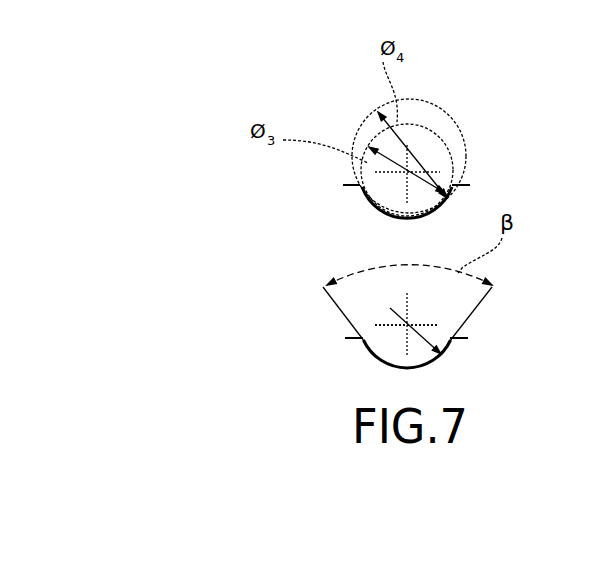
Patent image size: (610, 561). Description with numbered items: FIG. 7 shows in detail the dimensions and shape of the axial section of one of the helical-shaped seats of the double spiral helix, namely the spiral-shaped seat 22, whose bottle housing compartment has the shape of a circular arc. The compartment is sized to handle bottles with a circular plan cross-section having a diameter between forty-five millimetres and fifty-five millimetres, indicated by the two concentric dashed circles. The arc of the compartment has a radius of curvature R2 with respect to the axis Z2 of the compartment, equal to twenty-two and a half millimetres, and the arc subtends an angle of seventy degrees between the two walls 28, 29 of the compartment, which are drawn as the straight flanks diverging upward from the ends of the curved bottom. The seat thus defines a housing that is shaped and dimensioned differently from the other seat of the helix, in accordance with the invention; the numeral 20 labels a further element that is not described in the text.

The pulley 20 is at (577, 4).
The spiral-shaped seat 22 is at (362, 208).
The wall of the compartment 28 is at (358, 344).
The wall of the compartment 29 is at (453, 345).
The radius of curvature R2 is at (563, 327).
The axis of the compartment Z2 is at (488, 329).